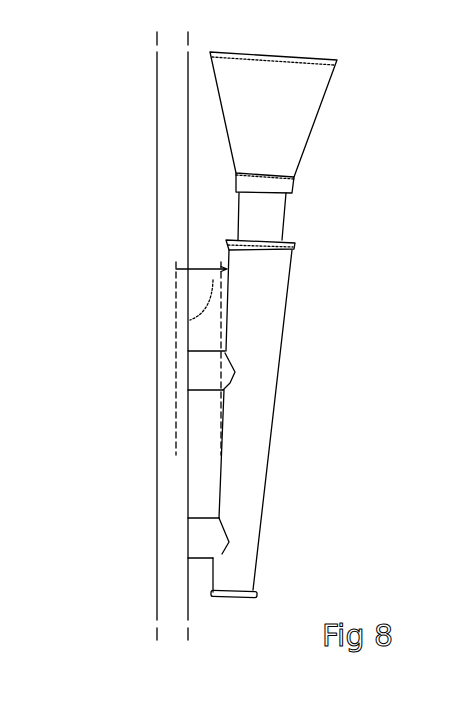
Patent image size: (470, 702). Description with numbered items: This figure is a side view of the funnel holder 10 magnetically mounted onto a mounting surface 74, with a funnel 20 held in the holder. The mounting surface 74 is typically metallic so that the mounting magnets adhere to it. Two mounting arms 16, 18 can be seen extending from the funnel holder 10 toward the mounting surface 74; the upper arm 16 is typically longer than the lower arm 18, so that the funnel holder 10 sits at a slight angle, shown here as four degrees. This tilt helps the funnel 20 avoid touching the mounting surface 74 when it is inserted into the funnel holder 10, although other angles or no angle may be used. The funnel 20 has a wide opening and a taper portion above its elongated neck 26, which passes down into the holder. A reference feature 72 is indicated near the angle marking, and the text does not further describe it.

The funnel holder 10 is at (295, 383).
The mounting arm 16 is at (207, 402).
The mounting arm 18 is at (205, 573).
The funnel 20 is at (342, 83).
The elongated neck 26 is at (295, 217).
The tilt angle reference 72 is at (190, 320).
The mounting surface 74 is at (152, 63).